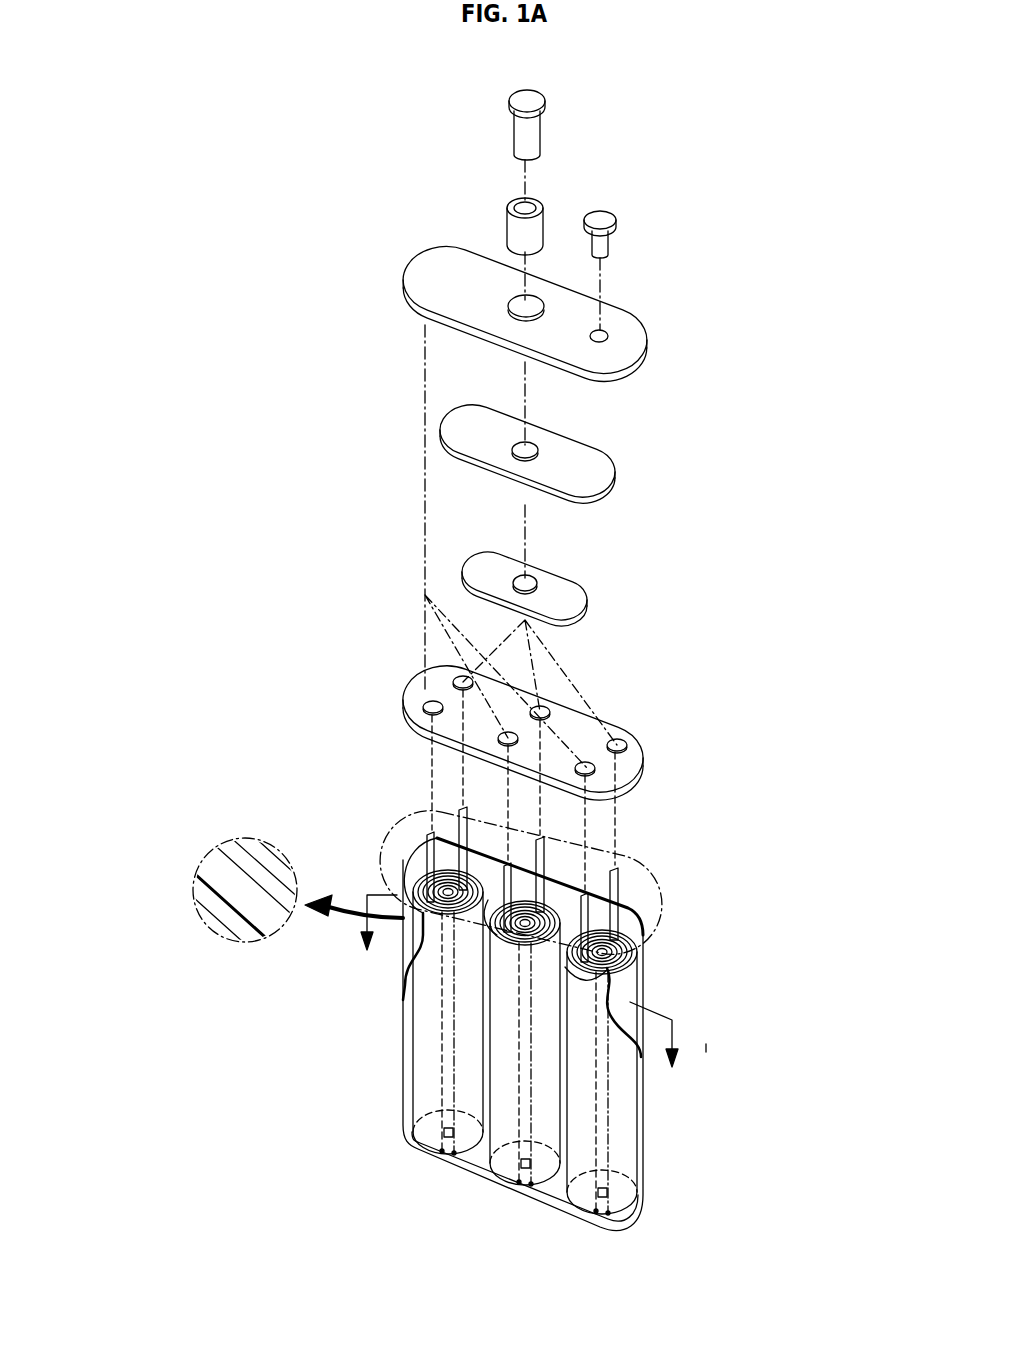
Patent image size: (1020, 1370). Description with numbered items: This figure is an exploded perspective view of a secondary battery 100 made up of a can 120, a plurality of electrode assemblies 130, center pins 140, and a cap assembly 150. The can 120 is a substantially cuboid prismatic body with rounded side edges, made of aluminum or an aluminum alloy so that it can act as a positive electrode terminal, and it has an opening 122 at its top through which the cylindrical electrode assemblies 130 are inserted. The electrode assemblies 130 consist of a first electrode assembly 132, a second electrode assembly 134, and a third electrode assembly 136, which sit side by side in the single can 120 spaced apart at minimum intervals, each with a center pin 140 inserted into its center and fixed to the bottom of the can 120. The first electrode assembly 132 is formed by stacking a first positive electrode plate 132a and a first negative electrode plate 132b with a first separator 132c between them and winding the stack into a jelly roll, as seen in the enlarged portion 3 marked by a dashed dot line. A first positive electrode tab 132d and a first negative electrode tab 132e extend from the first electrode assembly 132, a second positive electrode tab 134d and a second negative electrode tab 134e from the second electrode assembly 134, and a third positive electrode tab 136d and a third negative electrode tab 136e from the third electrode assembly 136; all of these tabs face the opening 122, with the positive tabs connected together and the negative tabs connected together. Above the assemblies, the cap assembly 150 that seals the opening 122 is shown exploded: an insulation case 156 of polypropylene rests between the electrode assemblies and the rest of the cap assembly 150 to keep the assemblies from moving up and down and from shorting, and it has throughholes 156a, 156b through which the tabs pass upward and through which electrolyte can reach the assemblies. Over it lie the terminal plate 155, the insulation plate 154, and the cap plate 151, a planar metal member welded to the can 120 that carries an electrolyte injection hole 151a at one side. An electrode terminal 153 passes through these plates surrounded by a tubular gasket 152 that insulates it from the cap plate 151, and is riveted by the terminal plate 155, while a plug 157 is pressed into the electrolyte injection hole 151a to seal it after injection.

The secondary battery 100 is at (438, 123).
The cap assembly 150 is at (290, 268).
The cap plate 151 is at (430, 272).
The electrolyte injection hole 151a is at (607, 328).
The gasket 152 is at (507, 203).
The electrode terminal 153 is at (540, 133).
The insulation plate 154 is at (590, 462).
The terminal plate 155 is at (570, 586).
The insulation case 156 is at (598, 718).
The throughhole 156a is at (425, 706).
The throughhole 156b is at (627, 745).
The plug 157 is at (604, 213).
The can 120 is at (668, 968).
The opening 122 is at (398, 861).
The electrode assemblies 130 is at (783, 1112).
The first electrode assembly 132 is at (473, 1083).
The first positive electrode plate 132a is at (250, 843).
The first negative electrode plate 132b is at (197, 873).
The first separator 132c is at (213, 850).
The first positive electrode tab 132d is at (425, 845).
The first negative electrode tab 132e is at (460, 805).
The second electrode assembly 134 is at (547, 1127).
The second positive electrode tab 134d is at (510, 858).
The second negative electrode tab 134e is at (541, 890).
The third electrode assembly 136 is at (620, 1190).
The third positive electrode tab 136d is at (588, 925).
The third negative electrode tab 136e is at (616, 918).
The center pins 140 is at (595, 1057).
The portion 3 is at (400, 845).